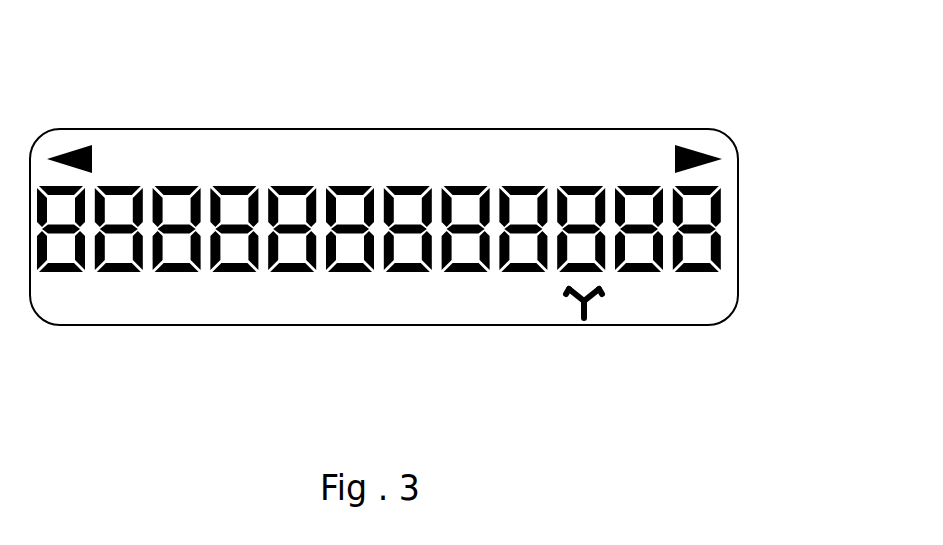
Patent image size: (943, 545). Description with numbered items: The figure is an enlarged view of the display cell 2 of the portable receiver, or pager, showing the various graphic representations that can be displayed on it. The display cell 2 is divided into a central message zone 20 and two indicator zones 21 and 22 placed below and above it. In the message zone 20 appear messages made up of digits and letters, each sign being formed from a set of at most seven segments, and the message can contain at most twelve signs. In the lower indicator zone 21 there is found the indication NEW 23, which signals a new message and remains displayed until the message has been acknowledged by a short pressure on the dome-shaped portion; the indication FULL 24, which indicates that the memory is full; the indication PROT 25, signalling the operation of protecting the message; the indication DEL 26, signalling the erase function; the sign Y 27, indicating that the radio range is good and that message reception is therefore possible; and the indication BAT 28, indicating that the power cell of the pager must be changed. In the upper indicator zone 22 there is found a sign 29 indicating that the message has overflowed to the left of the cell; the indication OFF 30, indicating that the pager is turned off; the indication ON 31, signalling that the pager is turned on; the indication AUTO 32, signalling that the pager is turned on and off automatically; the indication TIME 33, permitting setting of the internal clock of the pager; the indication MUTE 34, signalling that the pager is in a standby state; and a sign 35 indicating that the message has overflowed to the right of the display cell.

The display cell 2 is at (49, 326).
The message zone 20 is at (770, 230).
The indicator zone 21 is at (770, 302).
The indicator zone 22 is at (770, 160).
The indication NEW 23 is at (135, 320).
The indication FULL 24 is at (248, 320).
The indication PROT 25 is at (388, 320).
The indication DEL 26 is at (507, 320).
The sign Y 27 is at (588, 318).
The indication BAT 28 is at (672, 322).
The left overflow sign 29 is at (78, 142).
The indication OFF 30 is at (155, 138).
The indication ON 31 is at (240, 138).
The indication AUTO 32 is at (337, 138).
The indication TIME 33 is at (475, 138).
The indication MUTE 34 is at (595, 138).
The right overflow sign 35 is at (692, 140).